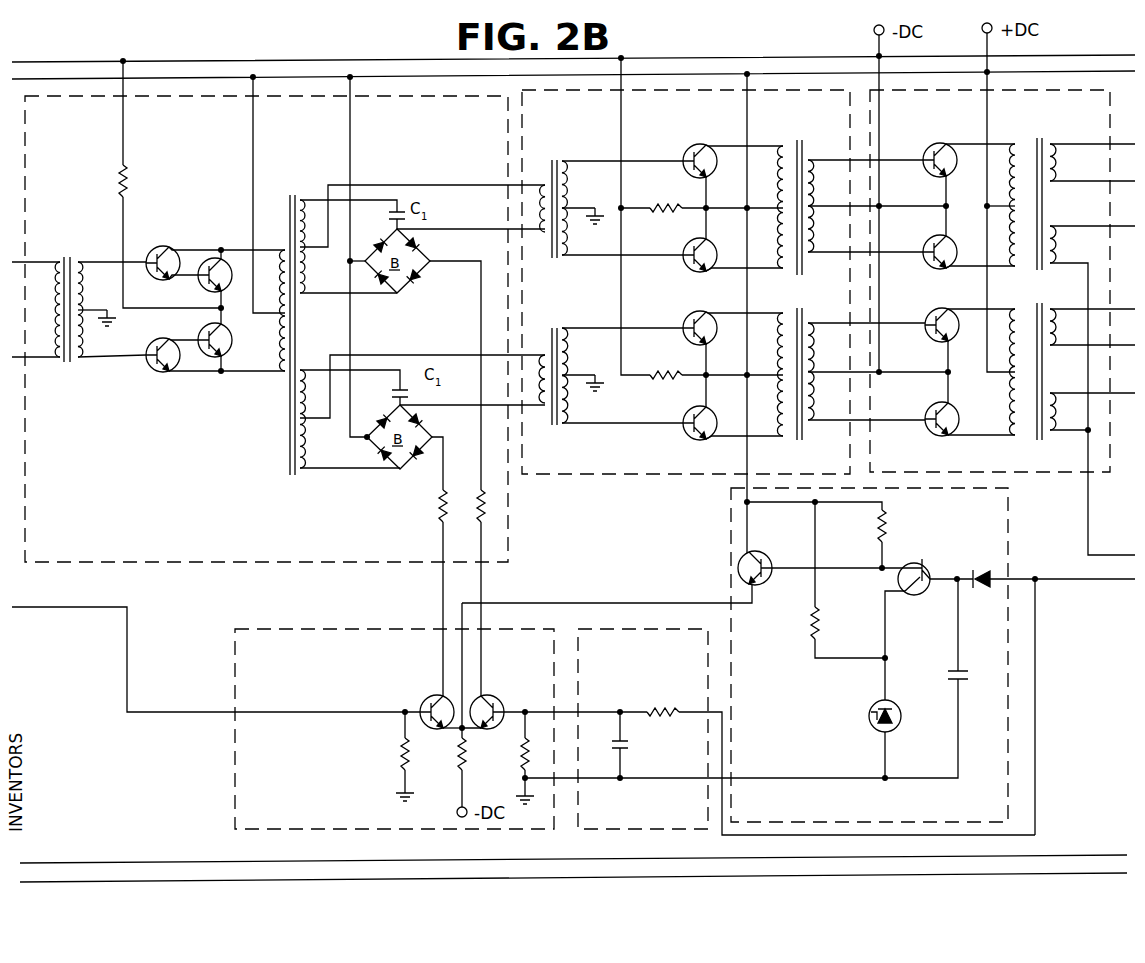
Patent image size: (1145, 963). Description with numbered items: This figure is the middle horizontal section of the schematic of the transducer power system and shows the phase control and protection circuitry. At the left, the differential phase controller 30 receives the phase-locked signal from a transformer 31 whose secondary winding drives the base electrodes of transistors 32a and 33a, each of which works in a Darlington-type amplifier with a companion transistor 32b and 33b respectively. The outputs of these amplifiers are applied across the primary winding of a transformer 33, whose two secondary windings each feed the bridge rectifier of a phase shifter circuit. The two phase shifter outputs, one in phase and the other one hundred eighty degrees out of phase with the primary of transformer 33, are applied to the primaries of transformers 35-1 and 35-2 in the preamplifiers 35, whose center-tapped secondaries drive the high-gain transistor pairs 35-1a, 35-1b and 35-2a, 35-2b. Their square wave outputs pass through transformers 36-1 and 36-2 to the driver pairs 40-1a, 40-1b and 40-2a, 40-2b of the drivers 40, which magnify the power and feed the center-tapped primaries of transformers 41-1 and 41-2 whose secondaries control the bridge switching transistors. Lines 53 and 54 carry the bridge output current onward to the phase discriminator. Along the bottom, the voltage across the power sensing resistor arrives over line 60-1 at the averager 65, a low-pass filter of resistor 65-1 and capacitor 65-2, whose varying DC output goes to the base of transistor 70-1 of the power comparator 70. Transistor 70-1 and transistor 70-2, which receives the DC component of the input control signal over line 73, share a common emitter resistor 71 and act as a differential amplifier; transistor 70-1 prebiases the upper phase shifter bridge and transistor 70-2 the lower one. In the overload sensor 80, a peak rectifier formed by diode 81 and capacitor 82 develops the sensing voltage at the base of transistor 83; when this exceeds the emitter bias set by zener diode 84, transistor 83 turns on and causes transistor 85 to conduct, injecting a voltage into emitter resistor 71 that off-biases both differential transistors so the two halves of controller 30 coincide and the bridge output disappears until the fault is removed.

The differential phase controller 30 is at (222, 568).
The transformer 31 is at (65, 256).
The transistor 32a is at (155, 247).
The transistor 32b is at (212, 258).
The transformer 33 is at (298, 192).
The transistor 33a is at (160, 372).
The transistor 33b is at (232, 352).
The preamplifiers 35 is at (597, 479).
The transformer 35-1 is at (562, 156).
The high-gain transistor amplifier 35-1a is at (690, 148).
The high-gain transistor amplifier 35-1b is at (688, 260).
The transformer 35-2 is at (560, 322).
The high-gain transistor amplifier 35-2a is at (700, 312).
The high-gain transistor amplifier 35-2b is at (700, 408).
The transformer 36-1 is at (798, 143).
The transformer 36-2 is at (808, 312).
The drivers 40 is at (1066, 478).
The driver amplifier transistor 40-1a is at (928, 148).
The driver amplifier transistor 40-1b is at (930, 268).
The driver amplifier transistor 40-2a is at (934, 338).
The driver amplifier transistor 40-2b is at (942, 406).
The transformer 41-1 is at (1037, 138).
The transformer 41-2 is at (1050, 294).
The line 53 is at (1085, 853).
The line 54 is at (158, 861).
The line 60-1 is at (1036, 713).
The averaging circuit 65 is at (712, 669).
The resistor 65-1 is at (656, 702).
The capacitor 65-2 is at (628, 749).
The power comparator 70 is at (312, 626).
The transistor 70-1 is at (500, 697).
The transistor 70-2 is at (440, 695).
The common emitter resistor 71 is at (467, 751).
The line 73 is at (129, 669).
The overload sensor 80 is at (730, 557).
The diode 81 is at (983, 590).
The capacitor 82 is at (950, 668).
The transistor 83 is at (921, 563).
The zener diode 84 is at (900, 713).
The transistor 85 is at (766, 556).